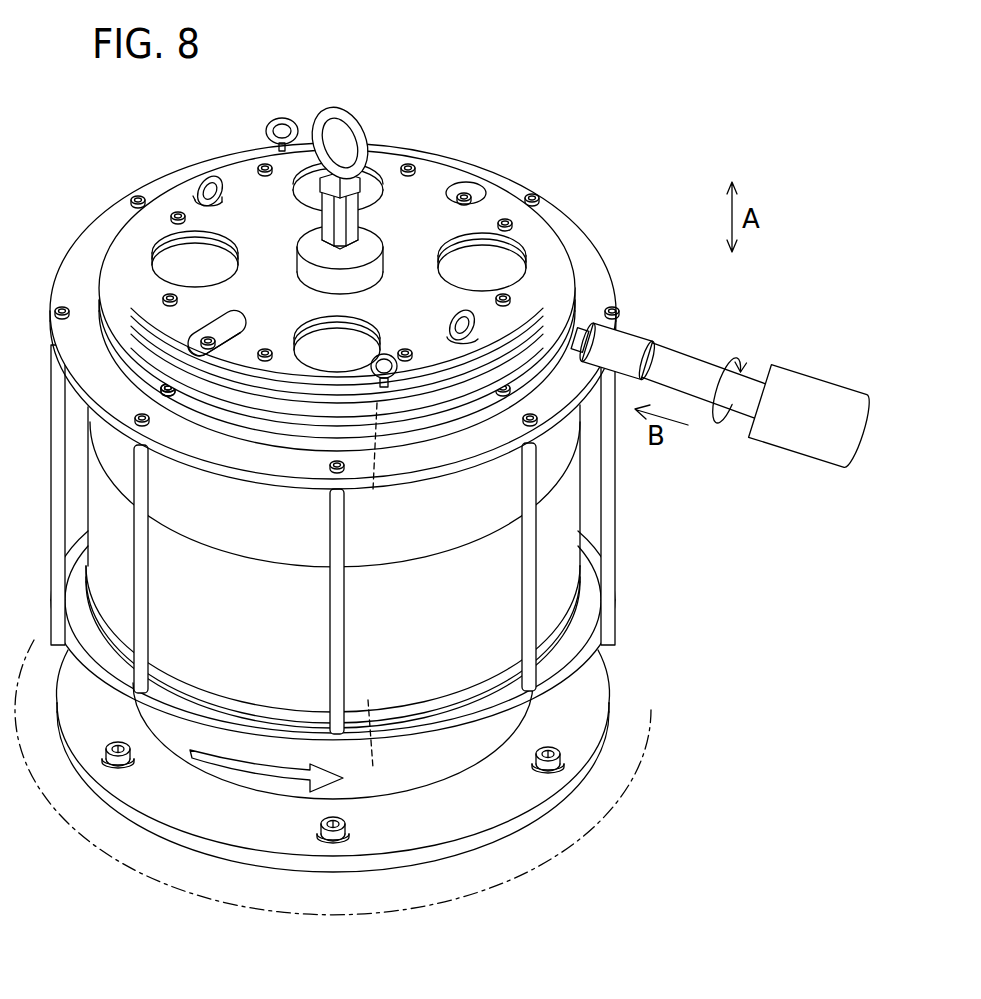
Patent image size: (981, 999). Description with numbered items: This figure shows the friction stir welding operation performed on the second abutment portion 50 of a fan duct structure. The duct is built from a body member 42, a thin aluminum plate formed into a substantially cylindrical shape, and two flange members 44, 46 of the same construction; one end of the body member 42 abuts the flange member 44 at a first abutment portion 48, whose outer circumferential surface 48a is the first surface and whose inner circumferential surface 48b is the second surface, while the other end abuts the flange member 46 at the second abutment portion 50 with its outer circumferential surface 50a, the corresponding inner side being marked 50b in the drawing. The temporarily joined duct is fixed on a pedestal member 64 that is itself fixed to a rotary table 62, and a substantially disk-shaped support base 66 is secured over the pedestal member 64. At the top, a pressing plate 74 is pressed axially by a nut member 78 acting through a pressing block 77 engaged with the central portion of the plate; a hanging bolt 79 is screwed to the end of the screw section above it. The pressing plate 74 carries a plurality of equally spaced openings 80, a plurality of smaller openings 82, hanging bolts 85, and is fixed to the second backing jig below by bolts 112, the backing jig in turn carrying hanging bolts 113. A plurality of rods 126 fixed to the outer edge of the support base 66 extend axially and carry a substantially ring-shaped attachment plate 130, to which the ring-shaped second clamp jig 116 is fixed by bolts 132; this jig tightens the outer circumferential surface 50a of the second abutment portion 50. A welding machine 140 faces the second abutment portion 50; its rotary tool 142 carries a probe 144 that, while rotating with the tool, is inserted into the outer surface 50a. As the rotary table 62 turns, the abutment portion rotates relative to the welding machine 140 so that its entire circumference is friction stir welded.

The body member 42 is at (604, 468).
The flange member 44 is at (513, 712).
The flange member 46 is at (270, 400).
The first abutment portion 48 is at (450, 708).
The outer circumferential surface 48a is at (447, 706).
The inner circumferential surface 48b is at (374, 746).
The second abutment portion 50 is at (420, 400).
The outer circumferential surface 50a is at (456, 404).
The groove slot 50b is at (382, 463).
The rotary table 62 is at (540, 868).
The pedestal member 64 is at (163, 810).
The support base 66 is at (70, 626).
The pressing plate 74 is at (452, 175).
The pressing block 77 is at (310, 250).
The nut member 78 is at (372, 234).
The hanging bolt 79 is at (366, 120).
The openings 80 is at (485, 242).
The openings 82 is at (198, 188).
The hanging bolts 85 is at (286, 121).
The bolts 112 is at (393, 355).
The hanging bolts 113 is at (452, 322).
The second clamp jig 116 is at (107, 295).
The rods 126 is at (344, 611).
The attachment plate 130 is at (578, 252).
The bolts 132 is at (157, 392).
The welding machine 140 is at (757, 345).
The rotary tool 142 is at (626, 356).
The probe 144 is at (613, 278).